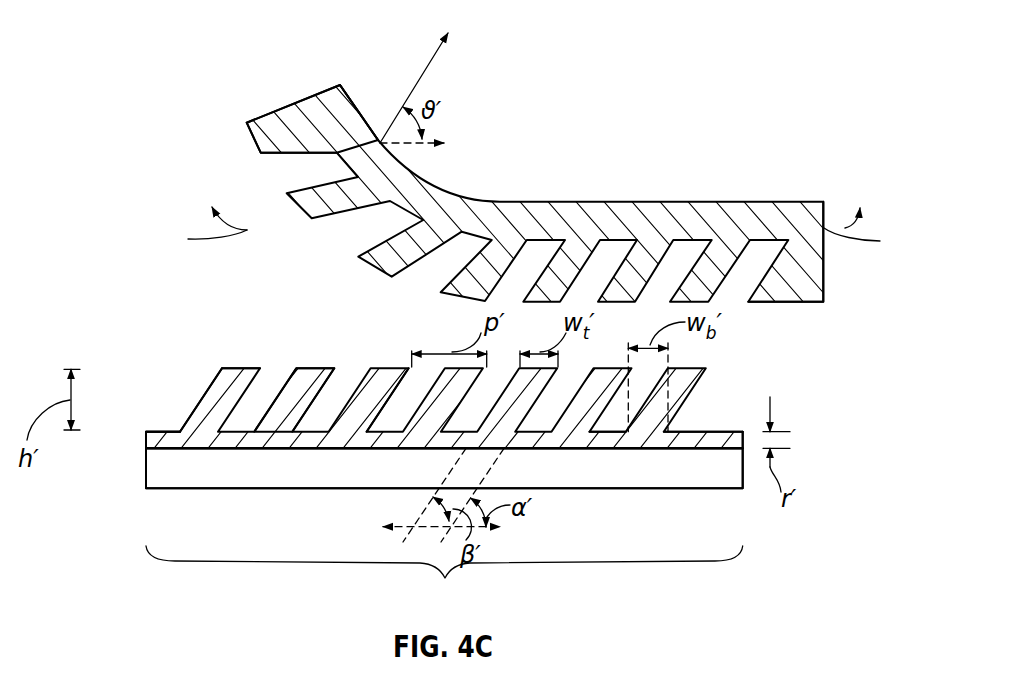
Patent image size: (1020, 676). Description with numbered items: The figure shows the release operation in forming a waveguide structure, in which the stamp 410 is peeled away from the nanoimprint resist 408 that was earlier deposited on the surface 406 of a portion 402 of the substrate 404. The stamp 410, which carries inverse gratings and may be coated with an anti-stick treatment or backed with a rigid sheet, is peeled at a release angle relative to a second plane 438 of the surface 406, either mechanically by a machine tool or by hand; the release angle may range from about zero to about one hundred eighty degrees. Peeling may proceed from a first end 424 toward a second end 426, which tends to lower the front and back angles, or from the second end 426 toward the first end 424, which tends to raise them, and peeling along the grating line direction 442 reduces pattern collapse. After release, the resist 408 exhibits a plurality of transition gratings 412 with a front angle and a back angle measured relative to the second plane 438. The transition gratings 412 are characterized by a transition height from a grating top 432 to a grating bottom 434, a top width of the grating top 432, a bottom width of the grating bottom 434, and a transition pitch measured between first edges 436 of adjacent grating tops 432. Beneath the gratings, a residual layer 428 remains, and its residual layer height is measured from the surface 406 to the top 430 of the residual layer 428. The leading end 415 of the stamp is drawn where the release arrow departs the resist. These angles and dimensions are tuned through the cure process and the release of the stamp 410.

The portion of substrate 402 is at (455, 490).
The substrate 404 is at (258, 455).
The surface 406 is at (157, 440).
The nanoimprint resist 408 is at (177, 432).
The stamp 410 is at (774, 201).
The transition gratings 412 is at (298, 402).
The leading end of upper body 415 is at (343, 88).
The first end 424 is at (290, 104).
The second end 426 is at (824, 288).
The residual layer 428 is at (607, 437).
The top of the residual layer 430 is at (695, 428).
The grating top 432 is at (242, 368).
The grating bottom 434 is at (203, 432).
The first edges 436 is at (412, 367).
The second plane 438 is at (427, 139).
The grating line direction 442 is at (536, 232).